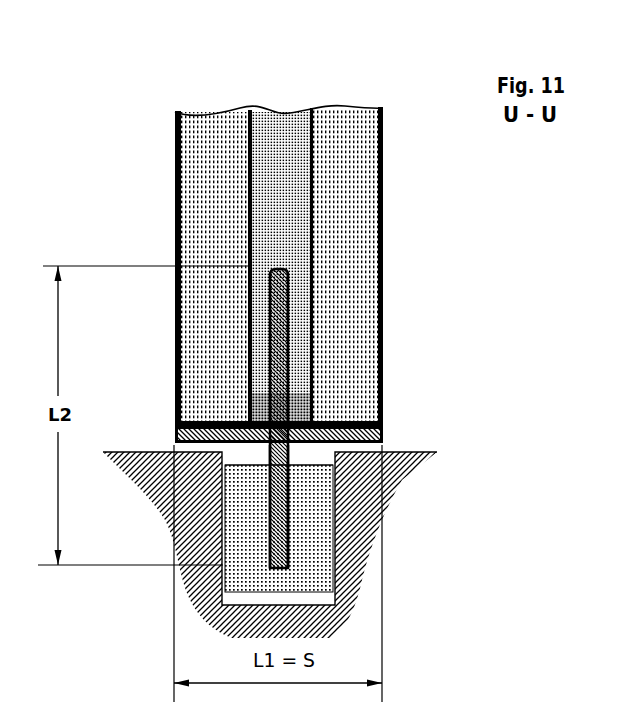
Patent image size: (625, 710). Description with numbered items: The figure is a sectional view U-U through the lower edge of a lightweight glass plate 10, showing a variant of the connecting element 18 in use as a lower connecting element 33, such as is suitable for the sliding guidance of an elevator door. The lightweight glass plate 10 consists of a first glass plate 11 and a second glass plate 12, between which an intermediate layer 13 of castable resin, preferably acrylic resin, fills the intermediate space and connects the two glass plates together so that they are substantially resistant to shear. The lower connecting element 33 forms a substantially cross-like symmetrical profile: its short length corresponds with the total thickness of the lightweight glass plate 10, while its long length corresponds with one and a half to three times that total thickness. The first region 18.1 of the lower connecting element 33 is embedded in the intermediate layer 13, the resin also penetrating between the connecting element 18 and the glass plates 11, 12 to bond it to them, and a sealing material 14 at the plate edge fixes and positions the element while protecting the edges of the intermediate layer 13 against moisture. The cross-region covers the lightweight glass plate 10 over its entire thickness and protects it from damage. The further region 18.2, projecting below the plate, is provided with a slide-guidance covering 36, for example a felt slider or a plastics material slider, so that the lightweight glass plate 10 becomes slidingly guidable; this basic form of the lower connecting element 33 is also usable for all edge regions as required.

The lightweight glass plate 10 is at (186, 84).
The first glass plate 11 is at (350, 162).
The second glass plate 12 is at (215, 163).
The intermediate layer 13 is at (280, 163).
The sealing material 14 is at (313, 400).
The connecting element 18 is at (346, 405).
The lower connecting element 33 is at (343, 413).
The first region 18.1 is at (290, 314).
The further region 18.2 is at (300, 463).
The slide-guidance covering 36 is at (318, 546).